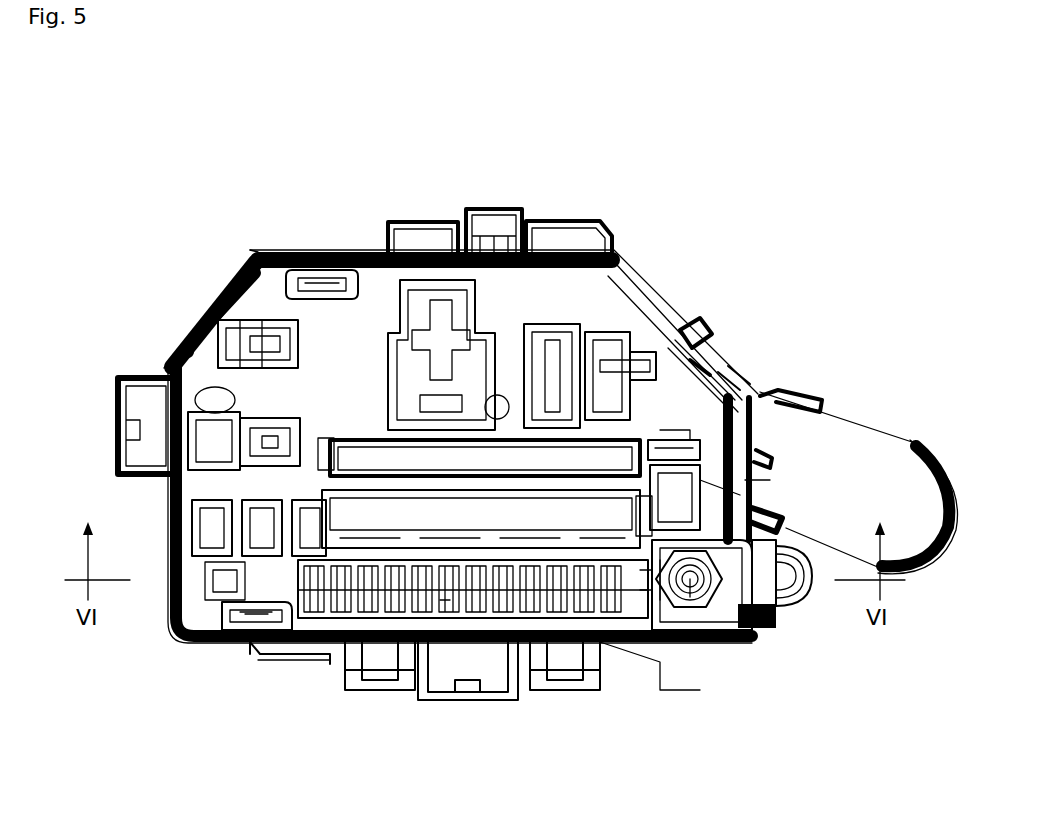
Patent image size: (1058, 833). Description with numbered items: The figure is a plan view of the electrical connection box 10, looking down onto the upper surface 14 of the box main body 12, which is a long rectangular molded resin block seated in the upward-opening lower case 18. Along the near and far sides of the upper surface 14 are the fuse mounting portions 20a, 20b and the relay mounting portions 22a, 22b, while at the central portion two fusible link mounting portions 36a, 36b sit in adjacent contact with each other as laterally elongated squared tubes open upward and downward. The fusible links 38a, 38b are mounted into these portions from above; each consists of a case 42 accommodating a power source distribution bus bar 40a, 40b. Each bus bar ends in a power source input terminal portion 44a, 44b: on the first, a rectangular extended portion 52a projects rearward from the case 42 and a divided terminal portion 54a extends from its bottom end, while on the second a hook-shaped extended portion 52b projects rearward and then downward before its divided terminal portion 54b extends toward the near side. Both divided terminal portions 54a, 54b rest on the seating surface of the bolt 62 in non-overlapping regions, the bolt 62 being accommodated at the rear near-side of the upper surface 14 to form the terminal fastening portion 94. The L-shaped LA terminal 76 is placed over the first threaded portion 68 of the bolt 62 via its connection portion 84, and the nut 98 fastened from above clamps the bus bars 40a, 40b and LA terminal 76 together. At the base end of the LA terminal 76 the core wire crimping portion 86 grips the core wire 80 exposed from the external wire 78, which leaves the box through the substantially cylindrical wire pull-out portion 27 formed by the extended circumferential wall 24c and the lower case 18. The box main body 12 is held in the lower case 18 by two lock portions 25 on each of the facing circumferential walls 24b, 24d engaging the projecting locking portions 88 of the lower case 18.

The electrical connection box 10 is at (473, 110).
The box main body 12 is at (639, 264).
The upper surface 14 is at (690, 302).
The lower case 18 is at (649, 728).
The fuse mounting portion 20a is at (330, 662).
The fuse mounting portion 20b is at (128, 440).
The relay mounting portion 22a is at (250, 256).
The relay mounting portion 22b is at (435, 262).
The circumferential wall 24b is at (240, 632).
The circumferential wall 24c is at (742, 470).
The circumferential wall 24d is at (362, 262).
The lock portion 25 is at (280, 300).
The wire pull-out portion 27 is at (864, 398).
The fusible link mounting portion 36a is at (350, 625).
The fusible link mounting portion 36b is at (340, 428).
The fusible link 38a is at (700, 338).
The fusible link 38b is at (562, 340).
The power source distribution bus bar 40a is at (700, 450).
The power source distribution bus bar 40b is at (745, 372).
The case 42 is at (536, 400).
The power source input terminal portion 44a is at (770, 458).
The power source input terminal portion 44b is at (775, 392).
The extended portion 52a is at (655, 578).
The extended portion 52b is at (694, 460).
The divided terminal portion 54a is at (540, 580).
The divided terminal portion 54b is at (700, 490).
The bolt 62 is at (660, 590).
The first threaded portion 68 is at (688, 625).
The LA terminal 76 is at (742, 620).
The external wire 78 is at (800, 582).
The core wire 80 is at (770, 600).
The connection portion 84 is at (692, 600).
The core wire crimping portion 86 is at (790, 595).
The locking portion 88 is at (215, 342).
The terminal fastening portion 94 is at (782, 516).
The nut 98 is at (636, 590).